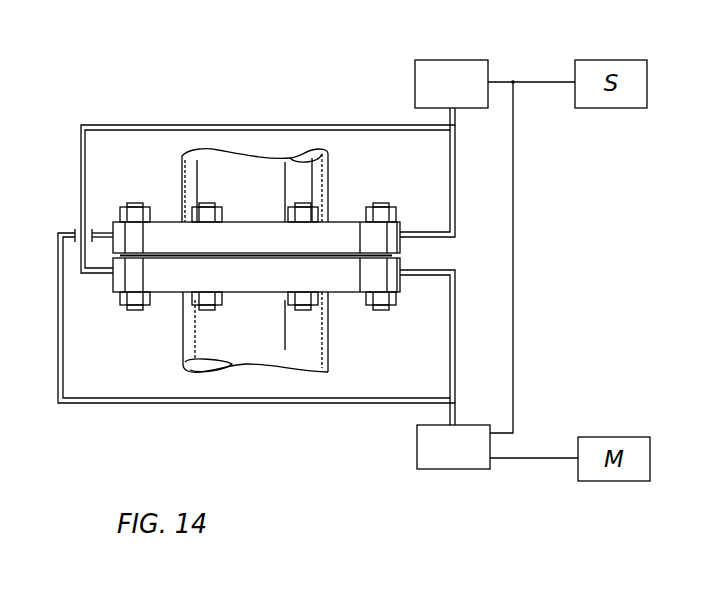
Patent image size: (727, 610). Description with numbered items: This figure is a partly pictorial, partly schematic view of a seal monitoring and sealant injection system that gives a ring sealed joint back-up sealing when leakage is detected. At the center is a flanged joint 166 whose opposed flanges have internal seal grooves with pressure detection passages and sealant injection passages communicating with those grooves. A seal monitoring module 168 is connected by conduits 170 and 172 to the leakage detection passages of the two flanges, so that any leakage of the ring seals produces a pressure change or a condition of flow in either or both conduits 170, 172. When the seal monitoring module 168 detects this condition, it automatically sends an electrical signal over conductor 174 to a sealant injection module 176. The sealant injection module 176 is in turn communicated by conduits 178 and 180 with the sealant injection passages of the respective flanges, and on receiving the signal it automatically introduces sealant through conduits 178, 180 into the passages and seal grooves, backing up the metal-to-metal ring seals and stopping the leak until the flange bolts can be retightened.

The flanged joint 166 is at (187, 275).
The seal monitoring module 168 is at (438, 60).
The conduit 170 is at (205, 125).
The conduit 172 is at (432, 228).
The electrical conductor 174 is at (513, 170).
The sealant injection module 176 is at (472, 469).
The conduit 178 is at (455, 291).
The conduit 180 is at (267, 403).